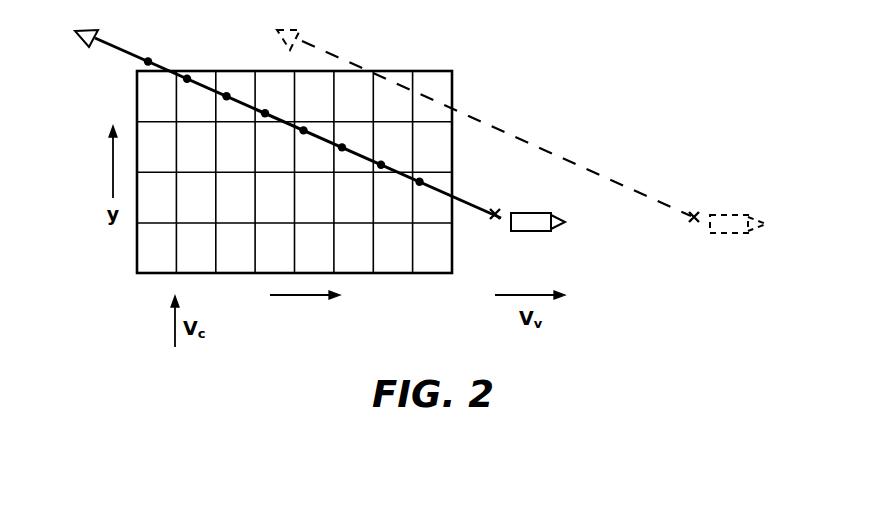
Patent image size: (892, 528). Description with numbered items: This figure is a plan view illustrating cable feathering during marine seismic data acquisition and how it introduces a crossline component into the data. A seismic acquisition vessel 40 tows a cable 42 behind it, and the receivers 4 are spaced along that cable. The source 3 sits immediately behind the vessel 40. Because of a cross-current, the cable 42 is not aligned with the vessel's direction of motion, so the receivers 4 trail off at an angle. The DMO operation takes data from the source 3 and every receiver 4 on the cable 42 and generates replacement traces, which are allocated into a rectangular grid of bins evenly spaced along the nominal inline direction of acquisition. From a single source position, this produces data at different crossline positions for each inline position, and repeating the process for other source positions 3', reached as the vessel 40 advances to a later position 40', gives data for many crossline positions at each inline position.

The cable 42 is at (130, 54).
The receivers 4 is at (187, 78).
The source 3 is at (501, 197).
The seismic acquisition vessel 40 is at (542, 238).
The other source positions 3' is at (706, 200).
The predicted vehicle position 40' is at (746, 241).